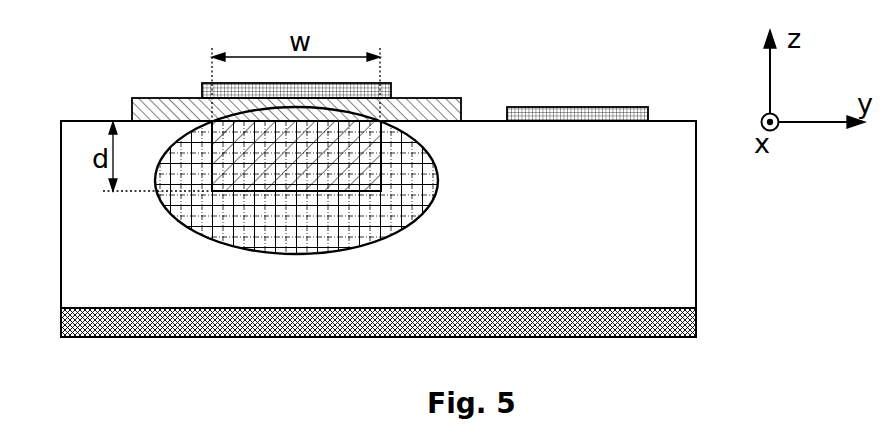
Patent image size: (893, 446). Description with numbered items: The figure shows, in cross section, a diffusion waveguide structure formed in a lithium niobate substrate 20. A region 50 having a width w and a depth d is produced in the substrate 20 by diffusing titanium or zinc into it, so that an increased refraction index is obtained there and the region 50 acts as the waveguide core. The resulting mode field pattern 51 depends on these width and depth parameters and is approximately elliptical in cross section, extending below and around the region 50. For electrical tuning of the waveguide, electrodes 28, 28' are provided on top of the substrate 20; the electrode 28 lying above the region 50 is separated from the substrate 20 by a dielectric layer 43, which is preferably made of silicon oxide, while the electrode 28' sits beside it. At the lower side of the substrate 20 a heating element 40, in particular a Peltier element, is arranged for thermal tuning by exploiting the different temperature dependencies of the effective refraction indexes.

The substrate 20 is at (683, 265).
The heating element 40 is at (687, 326).
The dielectric layer 43 is at (435, 108).
The electrode 28 is at (324, 74).
The electrode 28' is at (589, 91).
The region 50 is at (370, 158).
The mode field pattern 51 is at (393, 234).